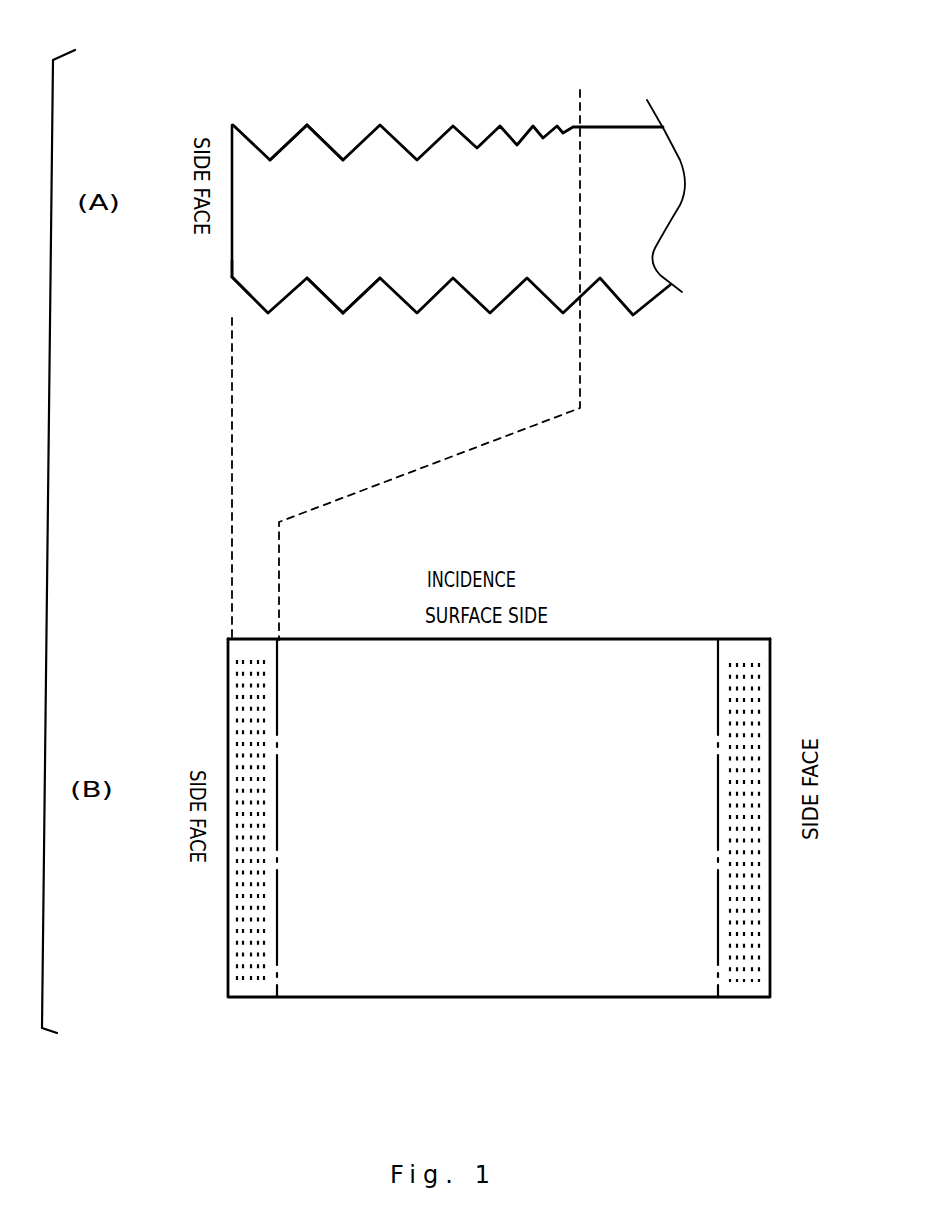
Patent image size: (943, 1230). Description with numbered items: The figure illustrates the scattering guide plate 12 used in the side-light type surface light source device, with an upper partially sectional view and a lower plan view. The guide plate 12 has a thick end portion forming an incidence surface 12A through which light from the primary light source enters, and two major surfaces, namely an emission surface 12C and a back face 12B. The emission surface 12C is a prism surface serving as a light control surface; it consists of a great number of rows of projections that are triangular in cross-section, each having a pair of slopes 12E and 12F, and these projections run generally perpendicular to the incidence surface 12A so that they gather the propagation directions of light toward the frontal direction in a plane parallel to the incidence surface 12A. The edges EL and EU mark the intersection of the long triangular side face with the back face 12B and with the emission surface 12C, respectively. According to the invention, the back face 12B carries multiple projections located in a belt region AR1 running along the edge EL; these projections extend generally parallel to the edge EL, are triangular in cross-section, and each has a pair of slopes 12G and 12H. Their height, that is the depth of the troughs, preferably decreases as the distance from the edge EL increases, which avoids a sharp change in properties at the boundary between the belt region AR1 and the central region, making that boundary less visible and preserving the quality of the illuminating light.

The scattering guide plate 12 is at (417, 978).
The incidence surface 12A is at (653, 210).
The back face 12B is at (538, 97).
The emission surface 12C is at (613, 332).
The slope 12E is at (327, 300).
The slope 12F is at (353, 303).
The slope 12G is at (293, 138).
The slope 12H is at (325, 142).
The belt region AR1 is at (425, 88).
The edge EL is at (233, 125).
The edge EU is at (232, 277).